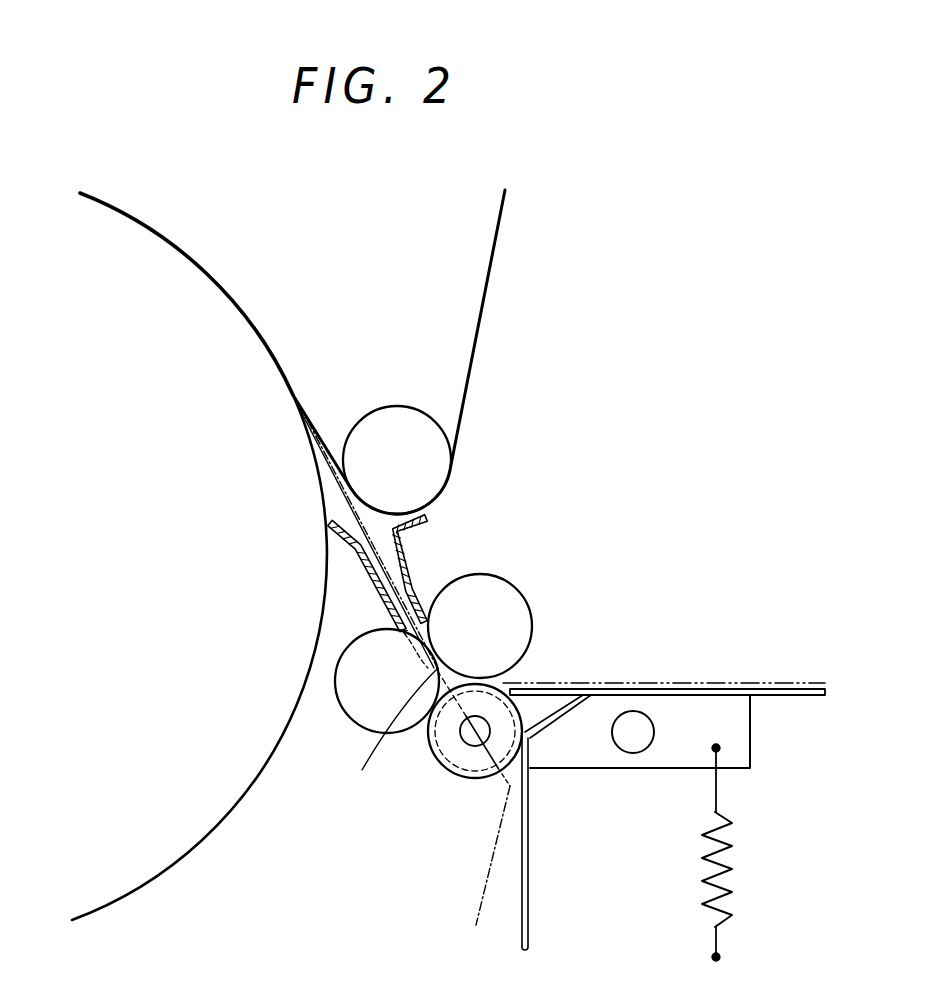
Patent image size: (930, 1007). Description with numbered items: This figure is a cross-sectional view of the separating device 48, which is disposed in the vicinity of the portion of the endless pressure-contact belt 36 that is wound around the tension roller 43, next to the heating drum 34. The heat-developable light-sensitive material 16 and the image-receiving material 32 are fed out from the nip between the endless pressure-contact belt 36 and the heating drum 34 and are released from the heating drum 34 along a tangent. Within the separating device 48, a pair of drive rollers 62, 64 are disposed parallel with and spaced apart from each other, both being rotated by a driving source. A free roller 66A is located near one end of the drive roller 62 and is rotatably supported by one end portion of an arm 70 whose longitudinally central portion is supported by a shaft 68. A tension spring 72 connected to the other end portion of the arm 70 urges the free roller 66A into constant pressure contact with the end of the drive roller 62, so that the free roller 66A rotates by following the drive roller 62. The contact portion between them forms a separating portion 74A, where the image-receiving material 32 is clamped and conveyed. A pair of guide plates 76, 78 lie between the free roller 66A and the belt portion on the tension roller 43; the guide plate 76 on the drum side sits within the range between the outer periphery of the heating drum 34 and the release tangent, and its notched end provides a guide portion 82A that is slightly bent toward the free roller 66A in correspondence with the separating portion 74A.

The heat-developable light-sensitive material 16 is at (482, 913).
The image-receiving material 32 is at (672, 683).
The heating drum 34 is at (200, 842).
The endless pressure-contact belt 36 is at (485, 287).
The tension roller 43 is at (397, 405).
The separating device 48 is at (508, 558).
The drive roller 62 is at (518, 588).
The drive roller 64 is at (348, 718).
The free roller 66A is at (465, 777).
The shaft 68 is at (633, 753).
The arm 70 is at (568, 768).
The tension spring 72 is at (720, 867).
The separating portion 74A is at (464, 670).
The guide plate 76 is at (350, 572).
The guide plate 78 is at (403, 555).
The guide portion 82A is at (373, 738).